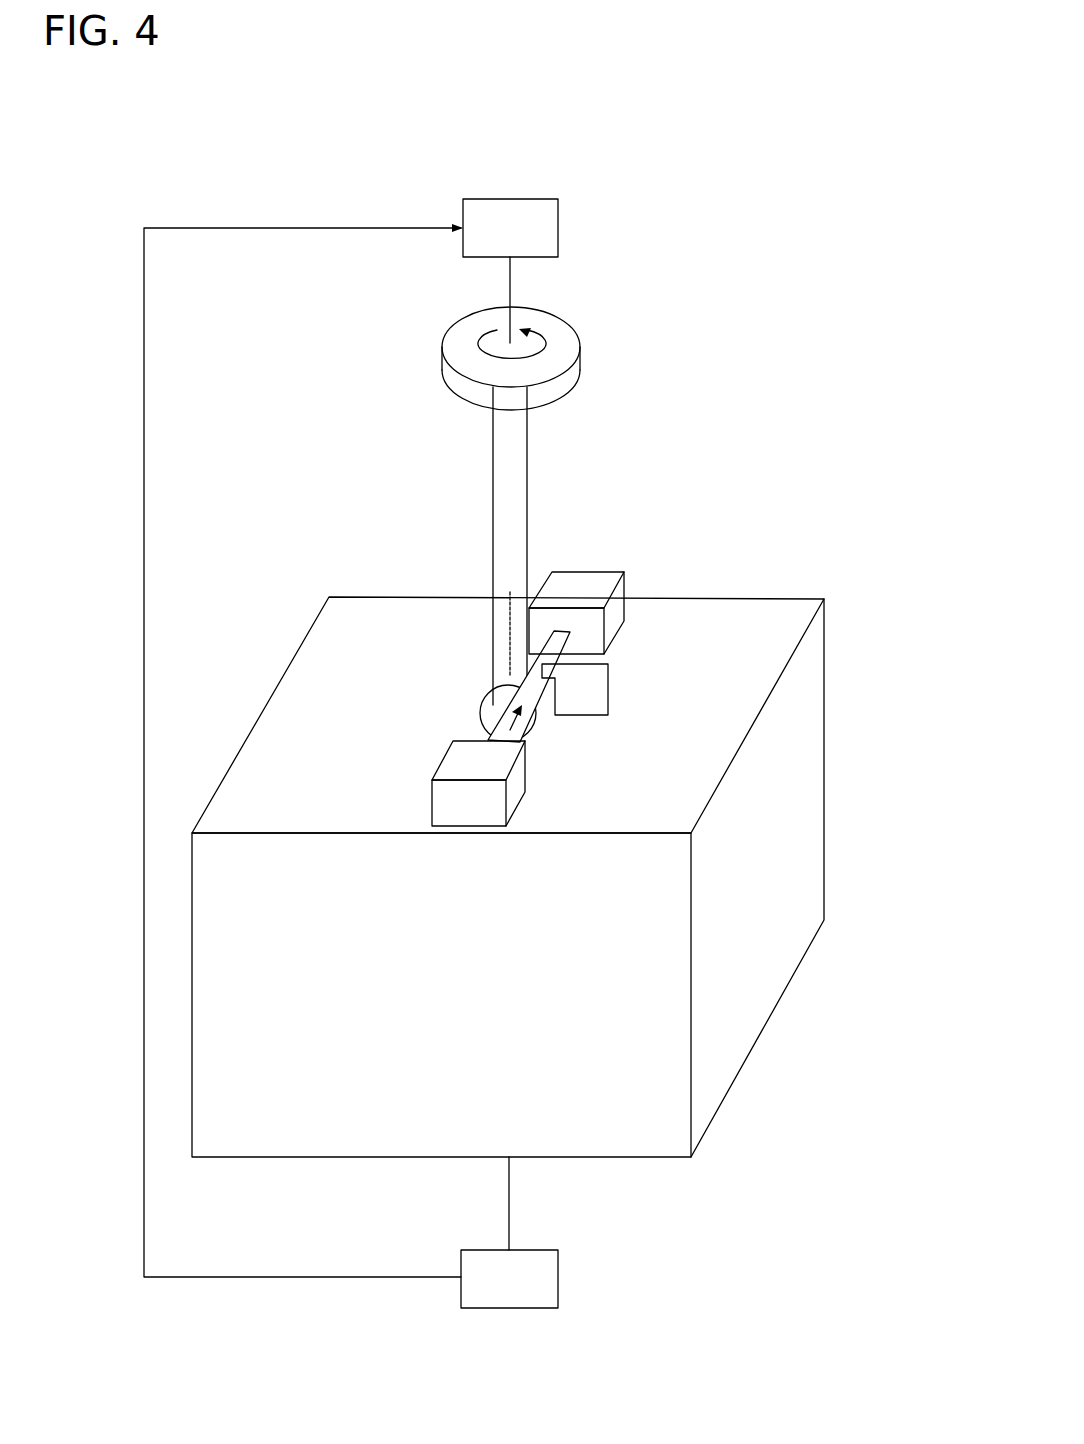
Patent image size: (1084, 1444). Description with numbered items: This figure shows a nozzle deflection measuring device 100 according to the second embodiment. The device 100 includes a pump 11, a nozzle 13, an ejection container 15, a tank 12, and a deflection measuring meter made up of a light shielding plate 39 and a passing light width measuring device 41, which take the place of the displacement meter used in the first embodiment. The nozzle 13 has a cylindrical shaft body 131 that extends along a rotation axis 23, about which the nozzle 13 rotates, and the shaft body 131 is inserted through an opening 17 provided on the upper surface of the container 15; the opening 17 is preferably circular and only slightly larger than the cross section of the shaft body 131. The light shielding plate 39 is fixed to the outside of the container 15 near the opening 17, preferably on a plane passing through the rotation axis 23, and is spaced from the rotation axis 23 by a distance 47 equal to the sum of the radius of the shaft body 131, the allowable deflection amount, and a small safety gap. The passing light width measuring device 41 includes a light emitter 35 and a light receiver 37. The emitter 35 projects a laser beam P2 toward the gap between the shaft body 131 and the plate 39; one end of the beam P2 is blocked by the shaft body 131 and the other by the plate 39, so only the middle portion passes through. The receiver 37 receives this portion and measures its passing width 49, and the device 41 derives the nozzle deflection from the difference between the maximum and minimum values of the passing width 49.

The nozzle deflection measuring device 100 is at (960, 105).
The pump 11 is at (558, 213).
The tank 12 is at (558, 1265).
The nozzle 13 is at (440, 371).
The shaft body 131 is at (493, 468).
The ejection container 15 is at (388, 597).
The opening 17 is at (483, 710).
The rotation axis 23 is at (510, 597).
The light emitter 35 is at (487, 828).
The light receiver 37 is at (626, 574).
The light shielding plate 39 is at (608, 685).
The passing light width measuring device 41 is at (605, 734).
The distance 47 is at (547, 642).
The passing width 49 is at (555, 630).
The laser beam P2 is at (525, 735).